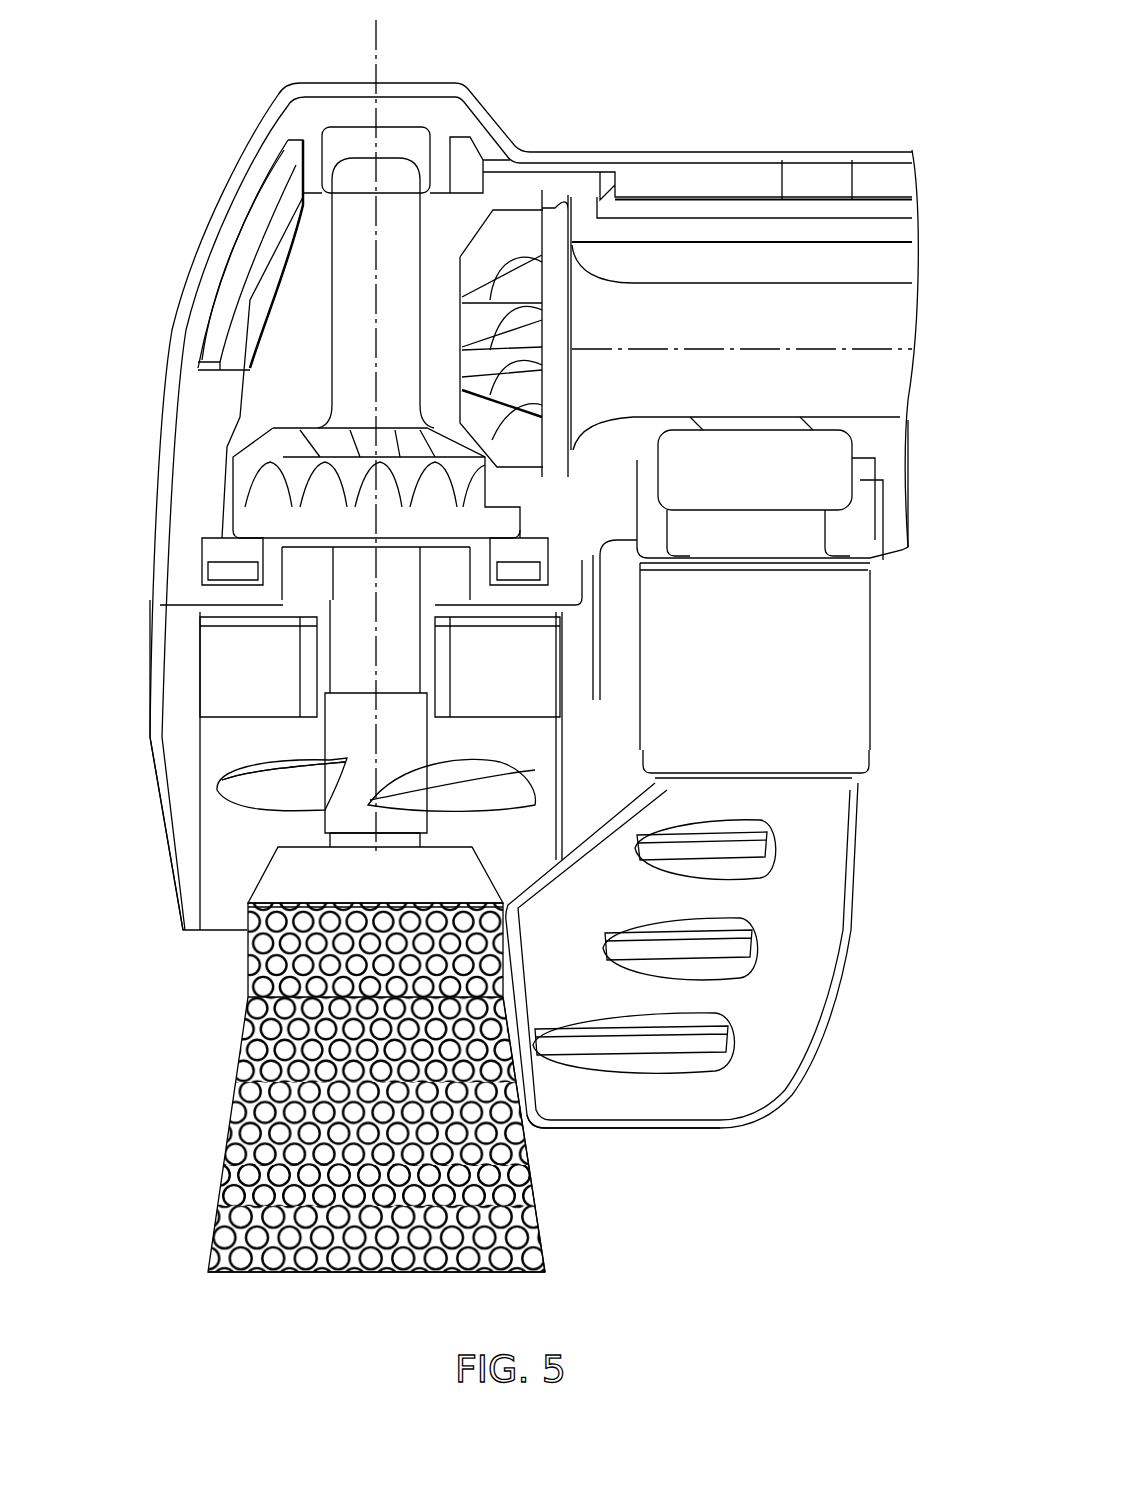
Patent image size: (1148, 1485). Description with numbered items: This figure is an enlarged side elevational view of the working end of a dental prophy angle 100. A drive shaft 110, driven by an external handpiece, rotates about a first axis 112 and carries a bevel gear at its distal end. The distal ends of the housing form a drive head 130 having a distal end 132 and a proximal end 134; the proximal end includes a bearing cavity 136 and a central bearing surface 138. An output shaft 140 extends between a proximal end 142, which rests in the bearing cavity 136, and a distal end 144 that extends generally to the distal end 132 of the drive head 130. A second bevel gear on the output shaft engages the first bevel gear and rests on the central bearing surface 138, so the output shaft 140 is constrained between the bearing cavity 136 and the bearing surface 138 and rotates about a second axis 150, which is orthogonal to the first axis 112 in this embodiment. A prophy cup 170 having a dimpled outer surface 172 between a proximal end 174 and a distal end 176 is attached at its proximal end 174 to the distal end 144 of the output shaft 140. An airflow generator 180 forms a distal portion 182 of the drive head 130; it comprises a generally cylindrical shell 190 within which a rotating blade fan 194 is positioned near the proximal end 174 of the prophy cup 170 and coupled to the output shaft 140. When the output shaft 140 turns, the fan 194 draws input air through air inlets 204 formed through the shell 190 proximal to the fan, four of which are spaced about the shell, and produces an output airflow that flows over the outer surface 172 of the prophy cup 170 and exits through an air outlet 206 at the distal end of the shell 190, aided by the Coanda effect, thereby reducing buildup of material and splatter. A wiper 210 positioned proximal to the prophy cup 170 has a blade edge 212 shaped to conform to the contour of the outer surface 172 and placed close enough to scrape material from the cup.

The dental prophy angle 100 is at (200, 62).
The drive shaft 110 is at (782, 310).
The first axis 112 is at (852, 350).
The drive head 130 is at (190, 245).
The distal end of the drive head 132 is at (213, 927).
The proximal end of the drive head 134 is at (325, 83).
The bearing cavity 136 is at (425, 157).
The central bearing surface 138 is at (290, 505).
The output shaft 140 is at (350, 276).
The proximal end of the output shaft 142 is at (380, 160).
The distal end of the output shaft 144 is at (352, 842).
The second axis 150 is at (378, 60).
The prophy cup 170 is at (537, 1196).
The outer surface of the prophy cup 172 is at (265, 1185).
The proximal end of the prophy cup 174 is at (455, 845).
The distal end of the prophy cup 176 is at (392, 1273).
The airflow generator 180 is at (150, 740).
The distal portion of the drive head 182 is at (160, 780).
The cylindrical shell 190 is at (167, 810).
The rotating blade fan 194 is at (270, 790).
The air inlet 204 is at (237, 650).
The air outlet 206 is at (228, 948).
The wiper 210 is at (832, 900).
The blade edge 212 is at (525, 1100).